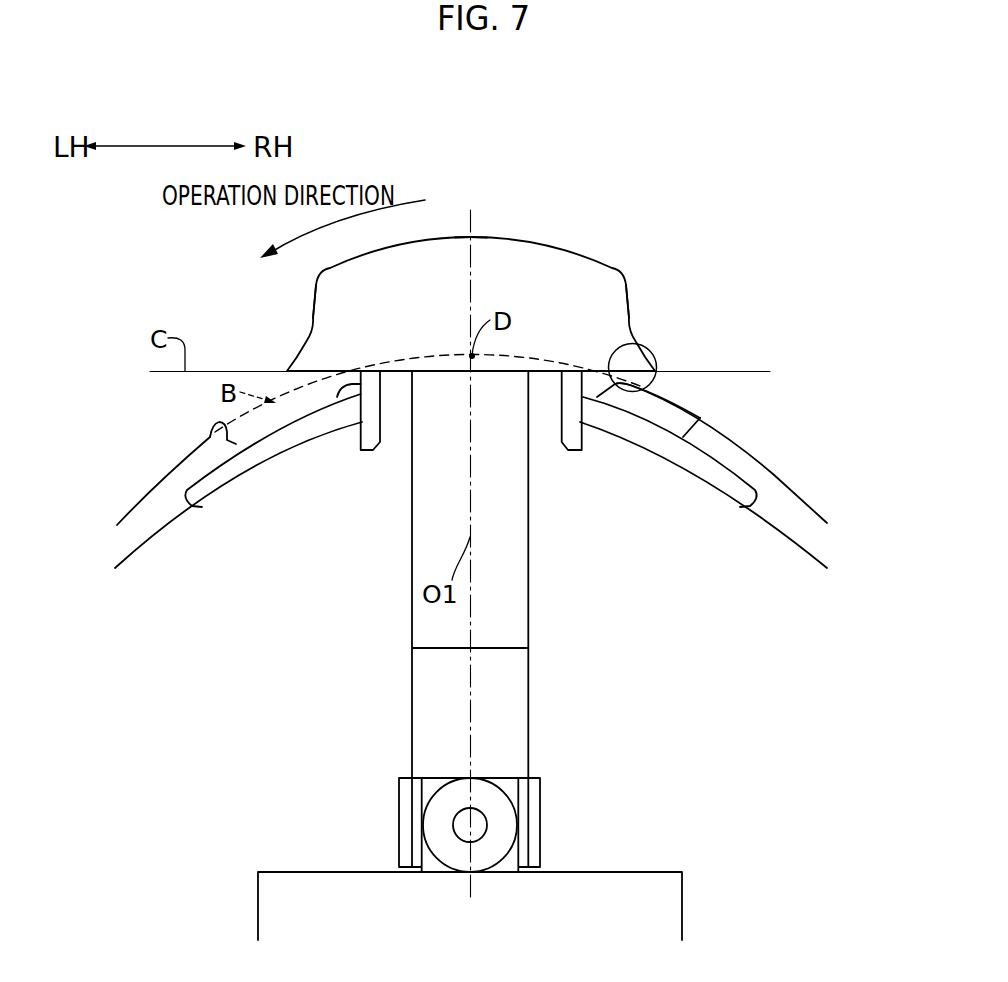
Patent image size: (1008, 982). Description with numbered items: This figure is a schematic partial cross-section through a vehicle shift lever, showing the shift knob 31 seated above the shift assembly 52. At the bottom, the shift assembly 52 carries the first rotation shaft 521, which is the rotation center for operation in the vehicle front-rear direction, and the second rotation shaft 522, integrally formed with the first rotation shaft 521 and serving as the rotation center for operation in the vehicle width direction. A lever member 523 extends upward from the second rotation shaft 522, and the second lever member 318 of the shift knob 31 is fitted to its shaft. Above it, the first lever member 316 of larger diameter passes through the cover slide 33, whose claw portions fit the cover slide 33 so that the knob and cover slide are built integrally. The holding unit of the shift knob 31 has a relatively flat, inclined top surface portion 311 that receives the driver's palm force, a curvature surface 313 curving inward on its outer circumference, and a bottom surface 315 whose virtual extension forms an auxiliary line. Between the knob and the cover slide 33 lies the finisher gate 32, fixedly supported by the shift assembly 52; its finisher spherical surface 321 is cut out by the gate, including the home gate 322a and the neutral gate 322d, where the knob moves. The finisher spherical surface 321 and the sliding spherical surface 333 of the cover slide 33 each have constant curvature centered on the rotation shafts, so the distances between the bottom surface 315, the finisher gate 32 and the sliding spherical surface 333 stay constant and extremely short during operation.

The shift knob 31 is at (575, 240).
The top surface portion 311 is at (473, 236).
The curvature surface 313 is at (310, 328).
The bottom surface 315 is at (645, 378).
The first lever member 316 is at (346, 386).
The second lever member 318 is at (504, 538).
The finisher gate 32 is at (124, 508).
The finisher spherical surface 321 is at (775, 474).
The home gate 322a is at (637, 342).
The neutral gate 322d is at (214, 424).
The cover slide 33 is at (690, 488).
The sliding spherical surface 333 is at (702, 417).
The shift assembly 52 is at (663, 864).
The first rotation shaft 521 is at (538, 806).
The second rotation shaft 522 is at (470, 826).
The lever member 523 is at (504, 711).